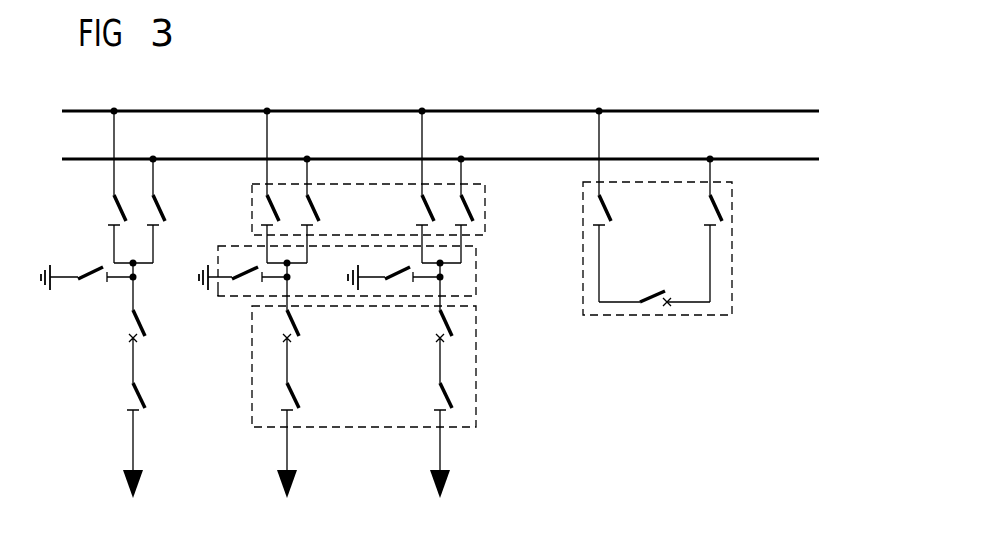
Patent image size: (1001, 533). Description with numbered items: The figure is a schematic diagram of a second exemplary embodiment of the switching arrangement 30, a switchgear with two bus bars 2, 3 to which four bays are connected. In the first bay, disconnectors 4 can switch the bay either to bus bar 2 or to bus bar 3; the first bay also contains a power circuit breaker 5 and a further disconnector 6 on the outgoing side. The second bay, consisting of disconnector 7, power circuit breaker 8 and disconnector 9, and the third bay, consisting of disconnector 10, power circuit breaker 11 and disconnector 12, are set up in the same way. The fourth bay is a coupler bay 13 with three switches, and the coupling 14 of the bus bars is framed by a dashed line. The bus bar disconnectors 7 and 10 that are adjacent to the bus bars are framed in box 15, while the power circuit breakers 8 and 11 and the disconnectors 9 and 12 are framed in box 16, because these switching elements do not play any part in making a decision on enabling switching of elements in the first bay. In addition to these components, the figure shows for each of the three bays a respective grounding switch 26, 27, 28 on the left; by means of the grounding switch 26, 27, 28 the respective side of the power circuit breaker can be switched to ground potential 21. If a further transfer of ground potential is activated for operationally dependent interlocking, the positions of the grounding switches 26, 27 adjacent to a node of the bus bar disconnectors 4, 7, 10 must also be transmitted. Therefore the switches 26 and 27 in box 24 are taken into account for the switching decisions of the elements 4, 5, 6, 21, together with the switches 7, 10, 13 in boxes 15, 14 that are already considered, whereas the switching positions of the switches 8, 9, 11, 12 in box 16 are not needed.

The bus bar 2 is at (750, 110).
The bus bar 3 is at (750, 162).
The disconnectors 4 is at (114, 244).
The power circuit breaker 5 is at (130, 338).
The disconnector 6 is at (130, 410).
The disconnector 7 is at (267, 242).
The power circuit breaker 8 is at (285, 338).
The disconnector 9 is at (288, 410).
The disconnector 10 is at (461, 256).
The power circuit breaker 11 is at (445, 338).
The disconnector 12 is at (446, 412).
The coupler bay 13 is at (670, 304).
The coupling 14 is at (733, 258).
The box 15 is at (252, 196).
The box 16 is at (252, 378).
The ground potential 21 is at (50, 280).
The box 24 is at (218, 296).
The grounding switch 26 is at (232, 275).
The grounding switch 27 is at (400, 270).
The grounding switch 28 is at (88, 270).
The switchgear arrangement 30 is at (777, 393).